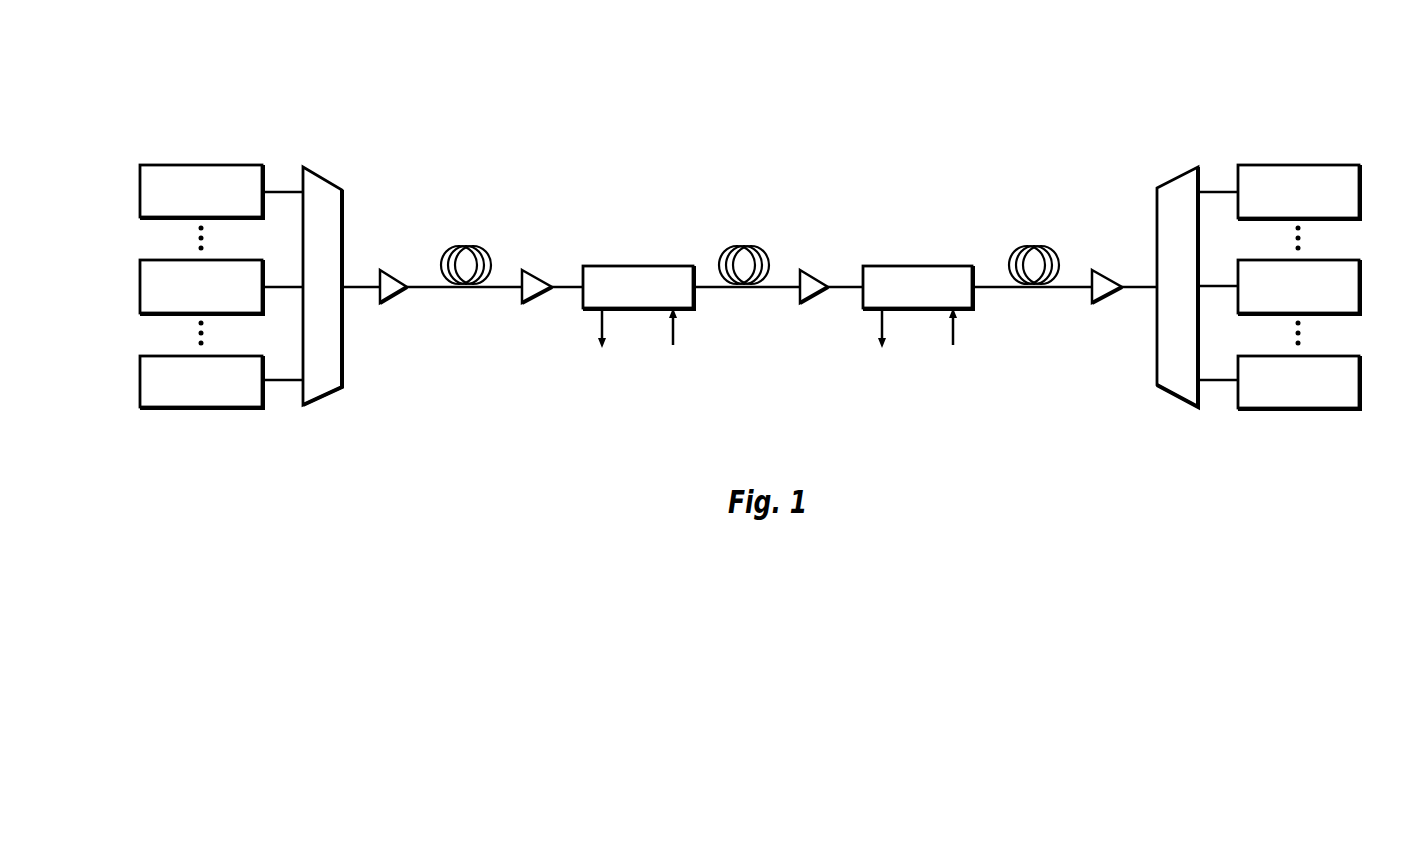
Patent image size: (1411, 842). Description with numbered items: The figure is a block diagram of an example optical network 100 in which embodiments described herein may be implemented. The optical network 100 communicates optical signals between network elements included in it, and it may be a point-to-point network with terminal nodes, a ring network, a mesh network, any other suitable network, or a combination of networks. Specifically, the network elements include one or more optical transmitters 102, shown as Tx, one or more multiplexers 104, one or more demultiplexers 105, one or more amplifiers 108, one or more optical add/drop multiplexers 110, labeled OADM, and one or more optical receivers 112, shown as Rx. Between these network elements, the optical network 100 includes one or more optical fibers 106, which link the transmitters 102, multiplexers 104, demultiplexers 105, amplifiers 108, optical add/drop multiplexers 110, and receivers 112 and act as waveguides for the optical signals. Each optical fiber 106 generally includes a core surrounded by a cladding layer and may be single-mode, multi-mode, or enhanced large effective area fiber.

The optical network 100 is at (268, 80).
The optical transmitter 102 is at (172, 165).
The multiplexer 104 is at (336, 180).
The demultiplexer 105 is at (1166, 180).
The optical fiber 106 is at (476, 246).
The amplifier 108 is at (398, 274).
The optical add/drop multiplexer 110 is at (628, 266).
The optical receiver 112 is at (1328, 165).